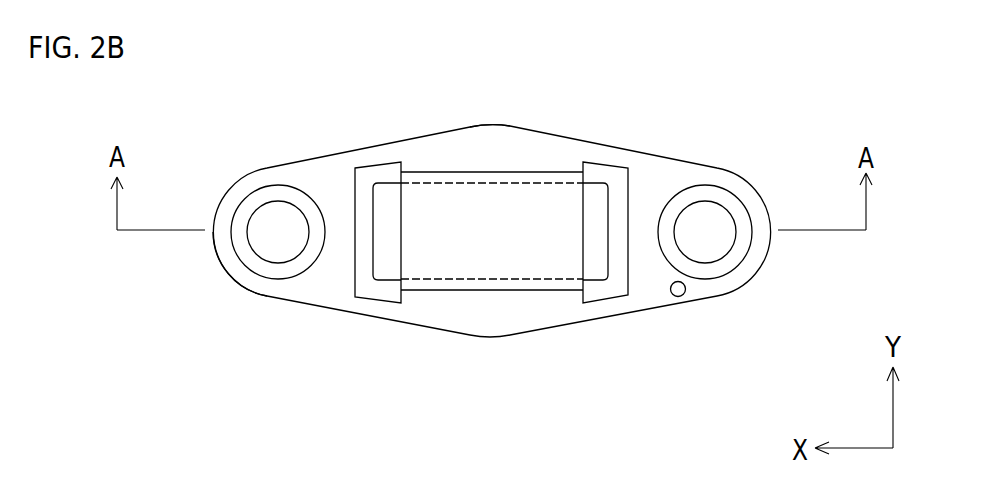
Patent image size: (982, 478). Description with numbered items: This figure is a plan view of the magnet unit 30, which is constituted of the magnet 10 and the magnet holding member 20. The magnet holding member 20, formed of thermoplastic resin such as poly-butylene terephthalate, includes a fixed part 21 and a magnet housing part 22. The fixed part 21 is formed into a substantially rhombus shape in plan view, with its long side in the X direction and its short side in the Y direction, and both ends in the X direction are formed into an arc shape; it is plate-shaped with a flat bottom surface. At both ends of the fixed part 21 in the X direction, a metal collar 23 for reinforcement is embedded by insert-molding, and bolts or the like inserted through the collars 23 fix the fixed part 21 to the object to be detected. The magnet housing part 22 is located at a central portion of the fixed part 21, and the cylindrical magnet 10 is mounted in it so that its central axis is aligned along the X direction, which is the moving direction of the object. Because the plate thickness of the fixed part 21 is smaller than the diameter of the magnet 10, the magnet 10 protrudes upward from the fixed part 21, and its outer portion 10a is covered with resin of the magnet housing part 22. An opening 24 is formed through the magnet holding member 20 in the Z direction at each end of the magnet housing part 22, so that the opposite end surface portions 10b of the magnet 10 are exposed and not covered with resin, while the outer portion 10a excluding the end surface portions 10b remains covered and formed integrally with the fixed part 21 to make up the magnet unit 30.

The magnet 10 is at (395, 170).
The outer portion 10a is at (495, 257).
The end surface portion 10b is at (387, 258).
The magnet holding member 20 is at (629, 144).
The fixed part 21 is at (328, 282).
The magnet housing part 22 is at (502, 172).
The collar 23 is at (270, 193).
The opening 24 is at (365, 180).
The magnet unit 30 is at (592, 96).